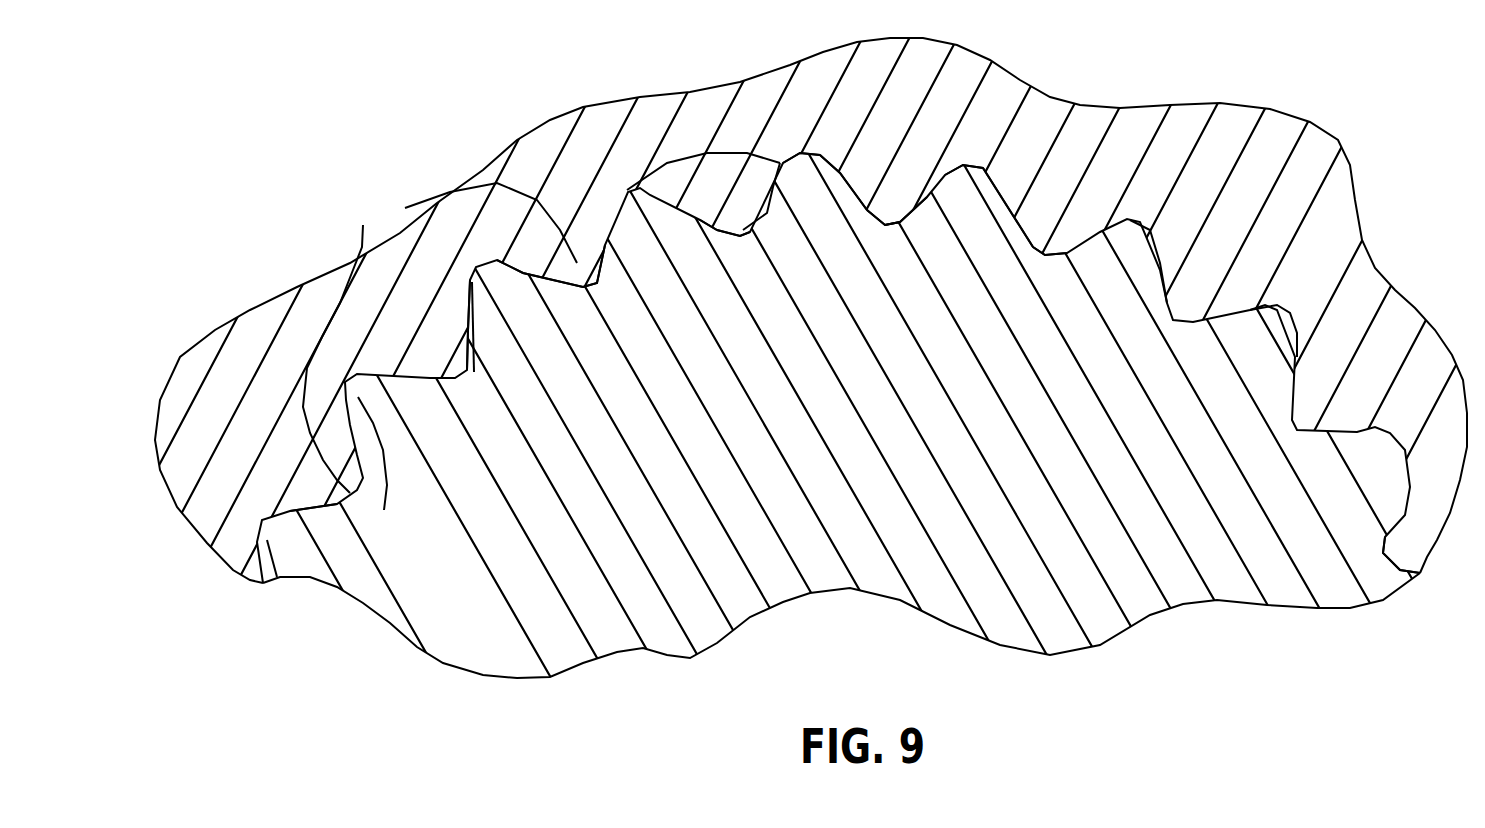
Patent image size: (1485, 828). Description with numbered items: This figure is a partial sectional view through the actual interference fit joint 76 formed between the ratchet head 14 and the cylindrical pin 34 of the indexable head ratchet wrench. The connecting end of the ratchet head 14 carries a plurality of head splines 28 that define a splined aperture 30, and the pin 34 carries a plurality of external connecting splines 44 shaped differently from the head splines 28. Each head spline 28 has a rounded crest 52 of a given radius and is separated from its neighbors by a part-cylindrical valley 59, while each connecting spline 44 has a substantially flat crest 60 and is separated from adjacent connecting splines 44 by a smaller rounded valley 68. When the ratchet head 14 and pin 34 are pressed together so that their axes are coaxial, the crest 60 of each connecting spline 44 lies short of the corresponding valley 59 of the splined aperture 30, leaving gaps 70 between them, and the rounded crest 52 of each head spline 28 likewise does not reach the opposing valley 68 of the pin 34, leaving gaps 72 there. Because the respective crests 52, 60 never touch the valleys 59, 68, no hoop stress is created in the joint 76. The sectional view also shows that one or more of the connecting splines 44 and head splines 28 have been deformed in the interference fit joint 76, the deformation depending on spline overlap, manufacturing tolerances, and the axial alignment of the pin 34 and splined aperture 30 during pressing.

The ratchet head 14 is at (1094, 116).
The cylindrical pin 34 is at (1015, 610).
The head splines 28 is at (435, 352).
The splined aperture 30 is at (890, 216).
The connecting splines 44 is at (493, 282).
The rounded crest 52 is at (747, 232).
The valley 59 is at (808, 153).
The crest 60 is at (805, 163).
The valley 68 is at (732, 232).
The gaps 70 is at (670, 166).
The gaps 72 is at (468, 383).
The interference fit joint 76 is at (1412, 568).